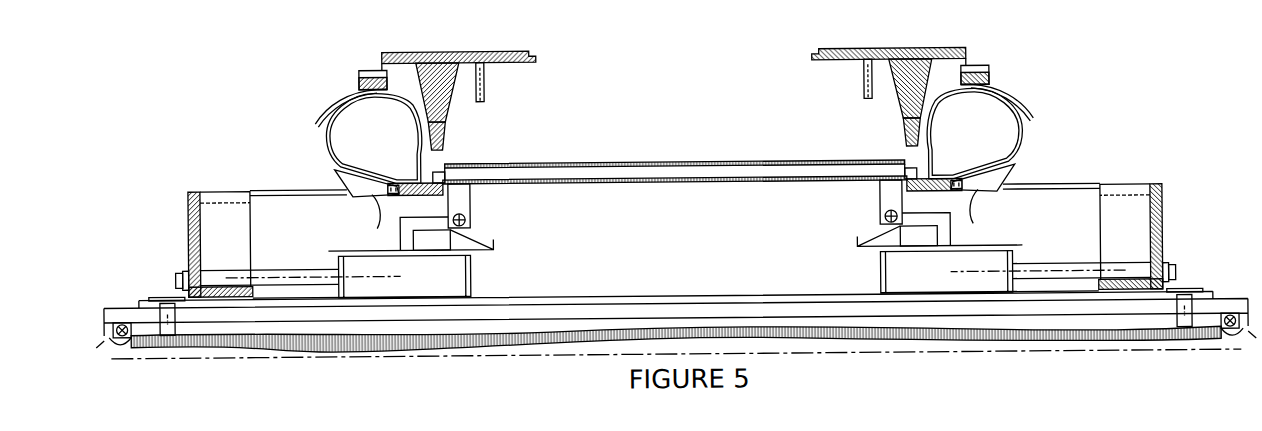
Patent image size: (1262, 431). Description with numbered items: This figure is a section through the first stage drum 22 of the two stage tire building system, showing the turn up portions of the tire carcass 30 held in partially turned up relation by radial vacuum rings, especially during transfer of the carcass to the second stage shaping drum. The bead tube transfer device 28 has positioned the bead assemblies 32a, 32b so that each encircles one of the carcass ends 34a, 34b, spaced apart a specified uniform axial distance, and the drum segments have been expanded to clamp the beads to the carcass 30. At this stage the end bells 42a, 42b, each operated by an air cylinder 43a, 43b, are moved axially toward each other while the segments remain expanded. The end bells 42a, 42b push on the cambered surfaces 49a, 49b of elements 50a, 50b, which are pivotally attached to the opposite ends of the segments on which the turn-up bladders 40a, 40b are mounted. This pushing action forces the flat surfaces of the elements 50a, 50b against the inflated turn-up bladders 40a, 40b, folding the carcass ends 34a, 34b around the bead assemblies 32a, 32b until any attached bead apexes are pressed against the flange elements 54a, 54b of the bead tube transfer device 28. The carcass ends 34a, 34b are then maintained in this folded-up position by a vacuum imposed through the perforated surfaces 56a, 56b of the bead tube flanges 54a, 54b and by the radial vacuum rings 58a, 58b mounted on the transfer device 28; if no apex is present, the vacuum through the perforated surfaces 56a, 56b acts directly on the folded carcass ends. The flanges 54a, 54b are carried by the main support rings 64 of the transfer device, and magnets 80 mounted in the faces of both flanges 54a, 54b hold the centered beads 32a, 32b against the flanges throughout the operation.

The first stage drum 22 is at (682, 104).
The bead tube transfer device 28 is at (816, 39).
The tire carcass 30 is at (655, 162).
The bead assembly 32a is at (420, 139).
The bead assembly 32b is at (926, 155).
The carcass end 34a is at (348, 97).
The carcass end 34b is at (1013, 98).
The turn-up bladder 40a is at (342, 134).
The turn-up bladder 40b is at (1004, 128).
The end bell 42a is at (188, 246).
The end bell 42b is at (1162, 246).
The air cylinder 43a is at (347, 180).
The air cylinder 43b is at (1015, 178).
The cambered surface 49a is at (380, 226).
The cambered surface 49b is at (988, 200).
The cambered surface element 50a is at (370, 188).
The cambered surface element 50b is at (1005, 223).
The bead tube flange 54a is at (451, 103).
The bead tube flange 54b is at (903, 94).
The perforated surface 56a is at (447, 128).
The perforated surface 56b is at (897, 116).
The radial vacuum ring 58a is at (372, 69).
The radial vacuum ring 58b is at (990, 74).
The main support ring 64 is at (463, 50).
The magnet 80 is at (445, 148).